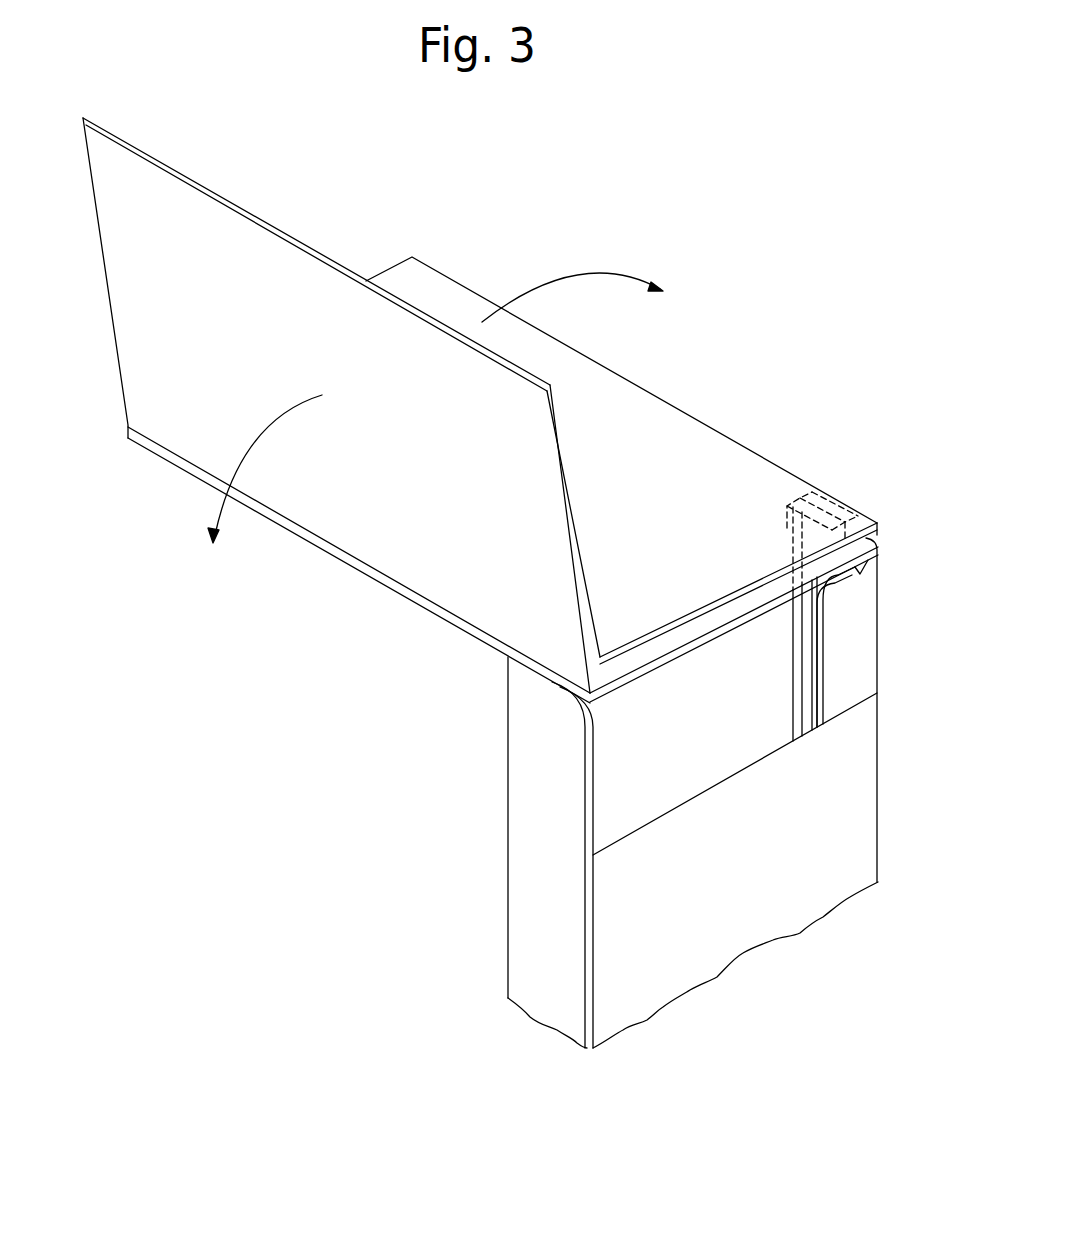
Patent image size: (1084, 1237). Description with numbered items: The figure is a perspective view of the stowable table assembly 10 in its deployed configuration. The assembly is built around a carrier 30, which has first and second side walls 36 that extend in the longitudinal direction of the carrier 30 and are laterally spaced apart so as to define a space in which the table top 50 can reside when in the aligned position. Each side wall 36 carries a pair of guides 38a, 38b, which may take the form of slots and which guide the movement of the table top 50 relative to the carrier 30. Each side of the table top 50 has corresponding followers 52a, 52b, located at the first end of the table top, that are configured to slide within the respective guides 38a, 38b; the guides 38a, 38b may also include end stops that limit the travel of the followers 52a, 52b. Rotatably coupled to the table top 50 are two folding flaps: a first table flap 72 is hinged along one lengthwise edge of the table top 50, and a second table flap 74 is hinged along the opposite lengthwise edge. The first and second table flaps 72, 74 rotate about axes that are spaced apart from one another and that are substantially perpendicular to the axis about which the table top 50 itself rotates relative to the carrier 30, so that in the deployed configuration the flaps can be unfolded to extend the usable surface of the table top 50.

The stowable table assembly 10 is at (757, 368).
The carrier 30 is at (537, 907).
The side wall 36 is at (847, 697).
The guide 38a is at (805, 678).
The guide 38b is at (822, 640).
The table top 50 is at (414, 606).
The follower 52a is at (810, 500).
The follower 52b is at (852, 500).
The first table flap 72 is at (163, 362).
The second table flap 74 is at (438, 288).